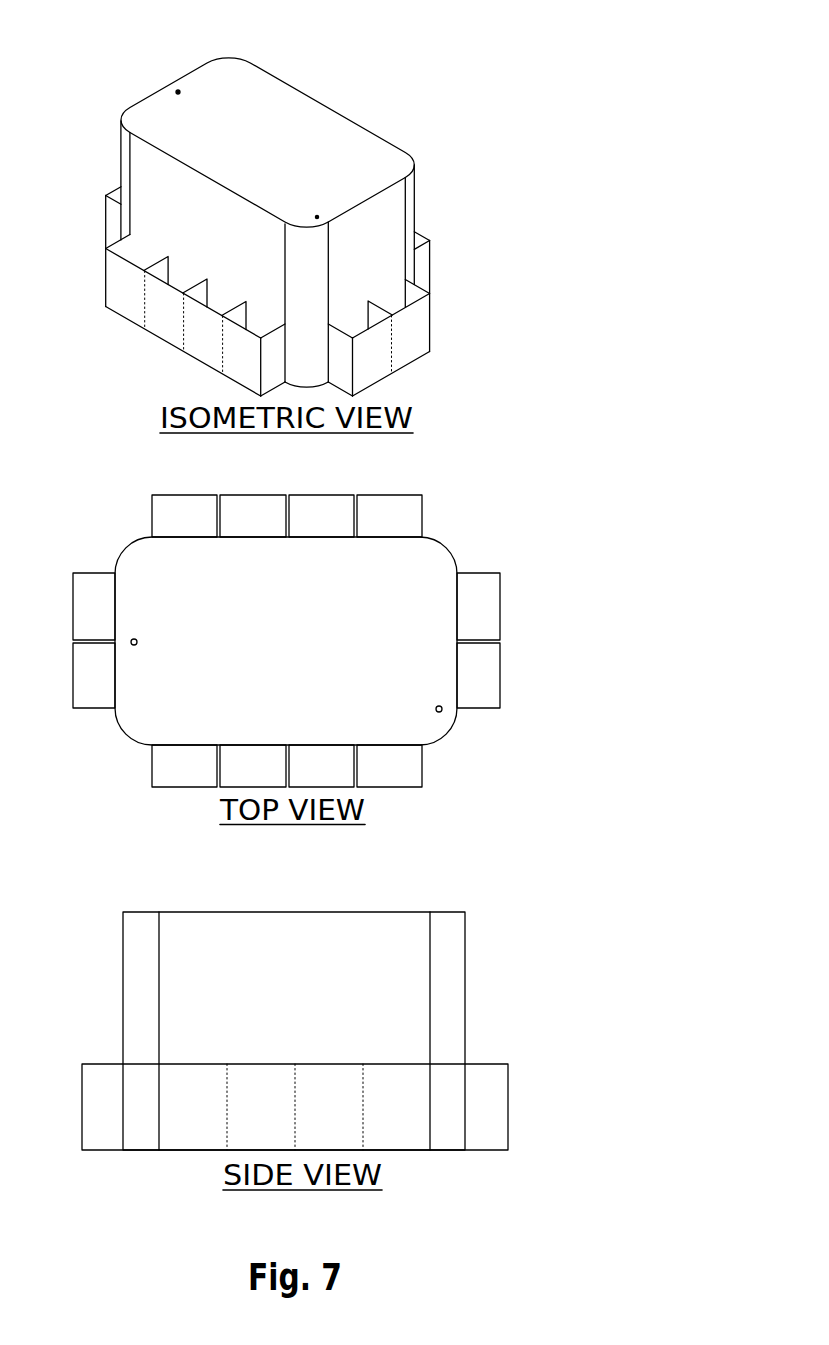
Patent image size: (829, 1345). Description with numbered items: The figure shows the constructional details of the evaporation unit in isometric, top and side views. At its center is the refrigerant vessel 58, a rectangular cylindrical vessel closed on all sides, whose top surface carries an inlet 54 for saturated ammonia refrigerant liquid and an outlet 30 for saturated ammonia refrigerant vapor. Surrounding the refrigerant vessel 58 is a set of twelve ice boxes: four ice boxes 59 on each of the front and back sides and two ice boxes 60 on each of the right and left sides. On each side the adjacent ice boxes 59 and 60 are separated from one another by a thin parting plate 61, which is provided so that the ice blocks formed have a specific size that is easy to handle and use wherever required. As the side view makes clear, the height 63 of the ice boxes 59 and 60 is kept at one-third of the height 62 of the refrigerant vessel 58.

The refrigerant vessel 58 is at (305, 125).
The ice boxes 59 is at (165, 315).
The ice boxes 60 is at (407, 342).
The parting plate 61 is at (472, 642).
The inlet 54 is at (133, 639).
The outlet 30 is at (441, 712).
The height of the refrigerant vessel 62 is at (215, 912).
The height of the ice boxes 63 is at (483, 1063).